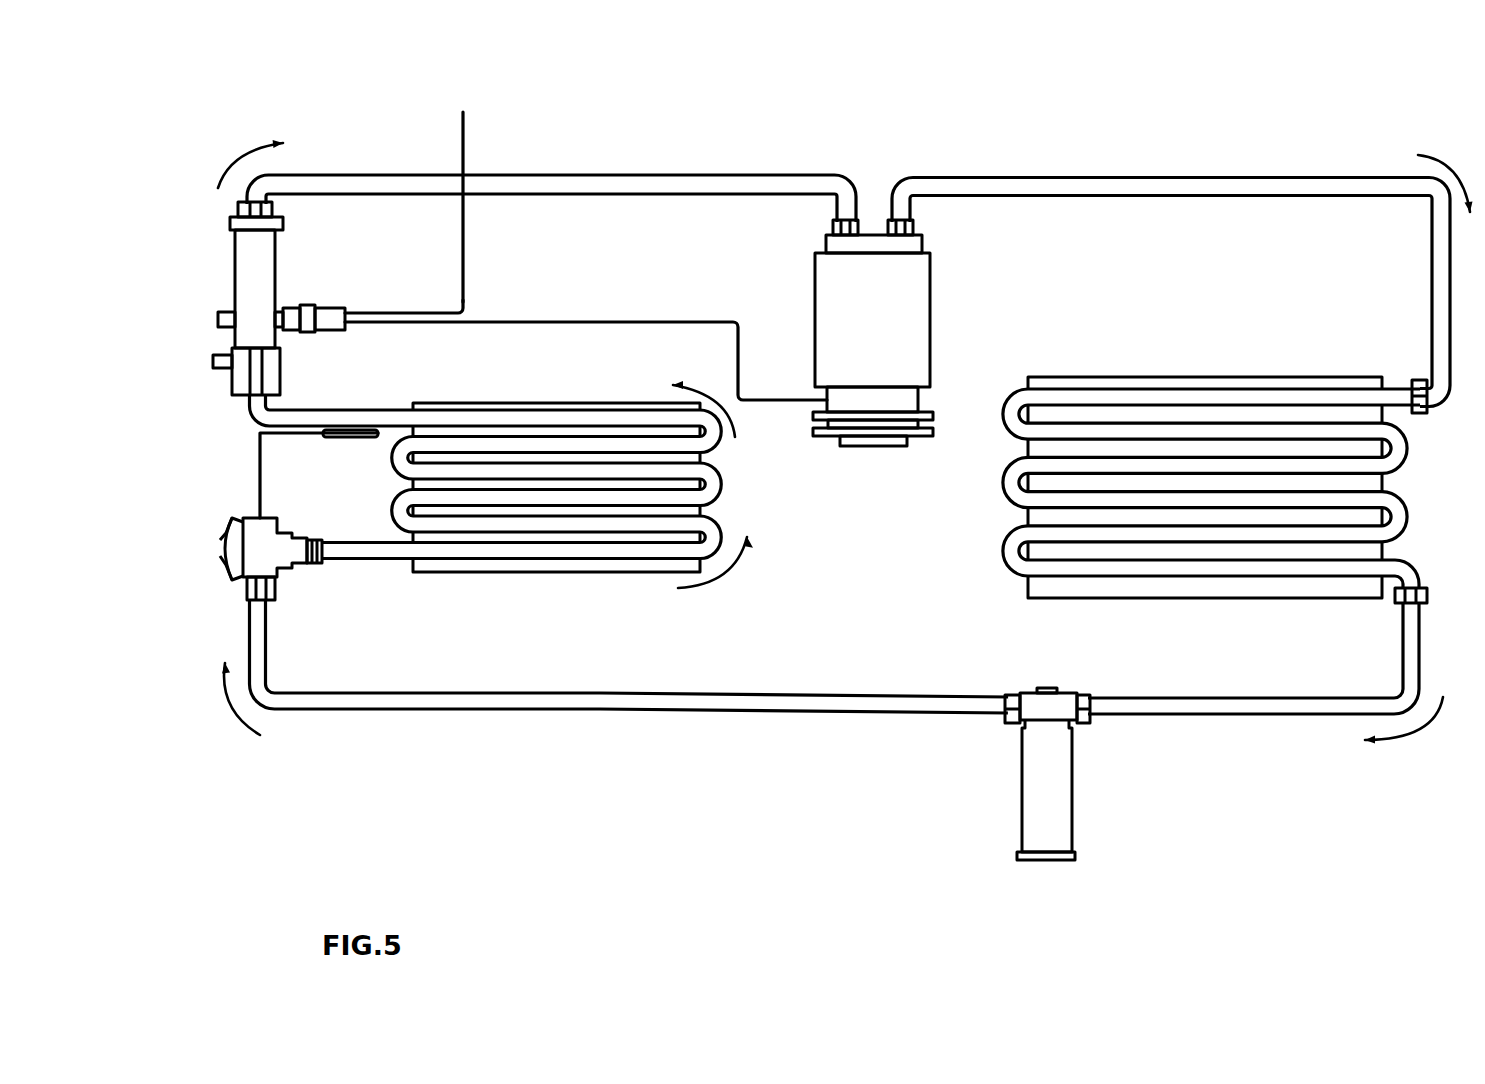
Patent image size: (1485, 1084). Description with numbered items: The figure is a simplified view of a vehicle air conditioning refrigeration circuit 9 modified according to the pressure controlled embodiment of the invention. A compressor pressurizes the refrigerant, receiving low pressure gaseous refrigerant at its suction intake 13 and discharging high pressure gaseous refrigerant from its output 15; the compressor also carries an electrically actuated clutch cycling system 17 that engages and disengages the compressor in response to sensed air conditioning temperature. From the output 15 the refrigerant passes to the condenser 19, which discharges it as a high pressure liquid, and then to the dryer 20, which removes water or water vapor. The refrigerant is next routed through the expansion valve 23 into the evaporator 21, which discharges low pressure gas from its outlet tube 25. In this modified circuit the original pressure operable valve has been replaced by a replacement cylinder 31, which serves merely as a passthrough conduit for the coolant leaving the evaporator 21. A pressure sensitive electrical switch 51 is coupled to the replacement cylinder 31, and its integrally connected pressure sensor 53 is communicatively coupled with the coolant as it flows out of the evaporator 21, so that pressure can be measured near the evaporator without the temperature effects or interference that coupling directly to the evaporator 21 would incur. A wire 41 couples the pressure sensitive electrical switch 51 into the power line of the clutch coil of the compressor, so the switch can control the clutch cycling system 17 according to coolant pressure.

The vehicle air conditioning refrigeration circuit 9 is at (877, 282).
The suction intake 13 is at (830, 230).
The output 15 is at (918, 230).
The electrically actuated clutch cycling system 17 is at (843, 403).
The condenser 19 is at (1182, 378).
The dryer 20 is at (1043, 862).
The evaporator 21 is at (535, 572).
The expansion valve 23 is at (243, 592).
The outlet tube 25 is at (243, 410).
The replacement cylinder 31 is at (237, 270).
The wire 41 is at (466, 165).
The pressure sensitive electrical switch 51 is at (320, 333).
The pressure sensor 53 is at (316, 303).